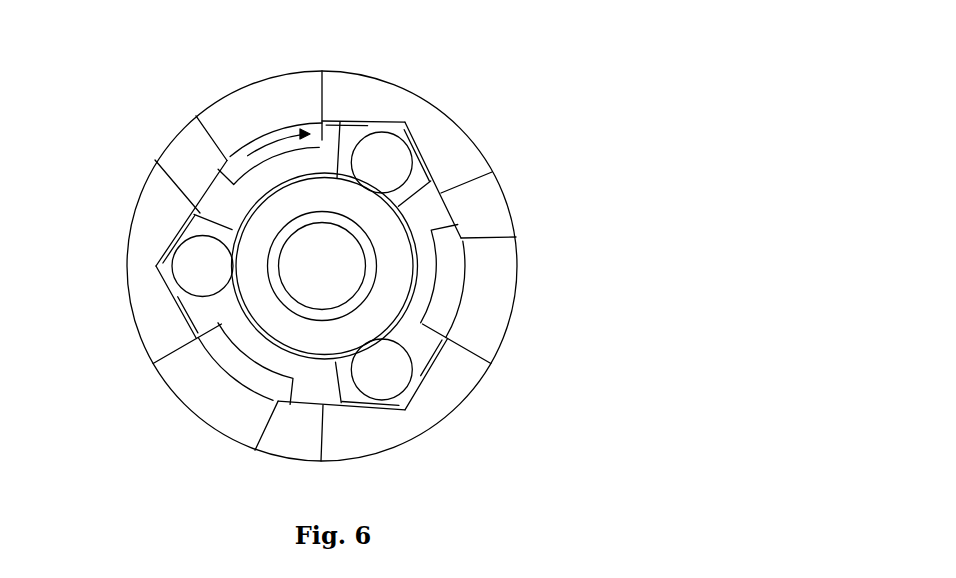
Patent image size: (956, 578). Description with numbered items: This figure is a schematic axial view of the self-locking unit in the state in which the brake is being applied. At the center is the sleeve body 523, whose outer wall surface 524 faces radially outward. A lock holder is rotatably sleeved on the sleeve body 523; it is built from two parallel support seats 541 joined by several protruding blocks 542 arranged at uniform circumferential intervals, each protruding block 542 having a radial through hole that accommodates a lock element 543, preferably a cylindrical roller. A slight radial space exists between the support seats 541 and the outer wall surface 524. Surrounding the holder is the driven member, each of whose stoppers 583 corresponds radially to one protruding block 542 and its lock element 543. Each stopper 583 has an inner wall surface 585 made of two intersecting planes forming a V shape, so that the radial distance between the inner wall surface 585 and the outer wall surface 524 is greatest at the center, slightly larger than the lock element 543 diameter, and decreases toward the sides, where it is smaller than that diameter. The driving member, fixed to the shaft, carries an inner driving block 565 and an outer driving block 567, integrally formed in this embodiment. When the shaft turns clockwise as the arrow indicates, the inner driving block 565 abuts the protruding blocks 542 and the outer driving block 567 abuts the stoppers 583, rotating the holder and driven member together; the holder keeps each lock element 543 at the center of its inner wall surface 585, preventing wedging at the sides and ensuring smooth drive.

The support seat 541 is at (197, 198).
The protruding block 542 is at (414, 177).
The lock element 543 is at (378, 150).
The sleeve body 523 is at (420, 254).
The outer wall surface 524 is at (400, 221).
The inner driving block 565 is at (247, 204).
The outer driving block 567 is at (275, 108).
The stopper 583 is at (400, 100).
The inner wall surface 585 is at (362, 122).